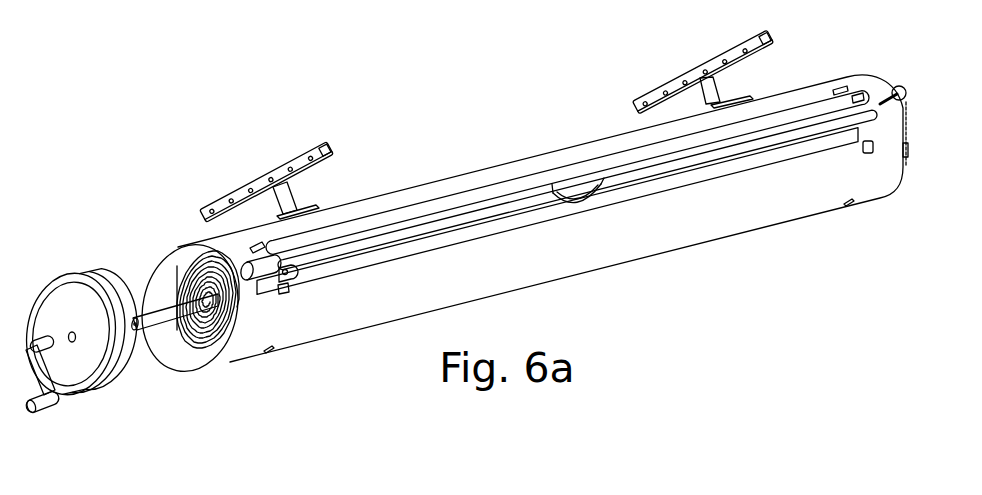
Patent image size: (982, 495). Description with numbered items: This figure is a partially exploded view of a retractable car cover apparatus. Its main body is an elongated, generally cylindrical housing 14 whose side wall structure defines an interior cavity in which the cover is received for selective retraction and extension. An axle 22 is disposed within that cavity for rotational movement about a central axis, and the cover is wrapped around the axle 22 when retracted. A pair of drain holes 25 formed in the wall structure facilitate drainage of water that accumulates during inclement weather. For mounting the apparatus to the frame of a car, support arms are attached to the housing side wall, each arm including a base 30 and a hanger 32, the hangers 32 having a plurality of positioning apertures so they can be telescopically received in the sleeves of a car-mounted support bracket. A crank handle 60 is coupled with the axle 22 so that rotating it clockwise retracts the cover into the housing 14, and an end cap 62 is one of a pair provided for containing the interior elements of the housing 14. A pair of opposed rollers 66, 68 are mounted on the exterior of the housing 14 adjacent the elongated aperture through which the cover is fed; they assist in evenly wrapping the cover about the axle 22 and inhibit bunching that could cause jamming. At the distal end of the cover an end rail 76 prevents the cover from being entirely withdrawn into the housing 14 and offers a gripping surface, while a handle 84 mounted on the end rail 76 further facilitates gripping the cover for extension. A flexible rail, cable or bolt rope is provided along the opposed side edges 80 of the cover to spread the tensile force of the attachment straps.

The housing 14 is at (729, 211).
The axle 22 is at (168, 313).
The drain holes 25 is at (268, 350).
The base 30 is at (318, 203).
The hanger 32 is at (257, 175).
The crank handle 60 is at (43, 405).
The end cap 62 is at (46, 321).
The roller 66 is at (348, 263).
The roller 68 is at (412, 212).
The end rail 76 is at (517, 195).
The side edges 80 is at (245, 263).
The handle 84 is at (575, 198).